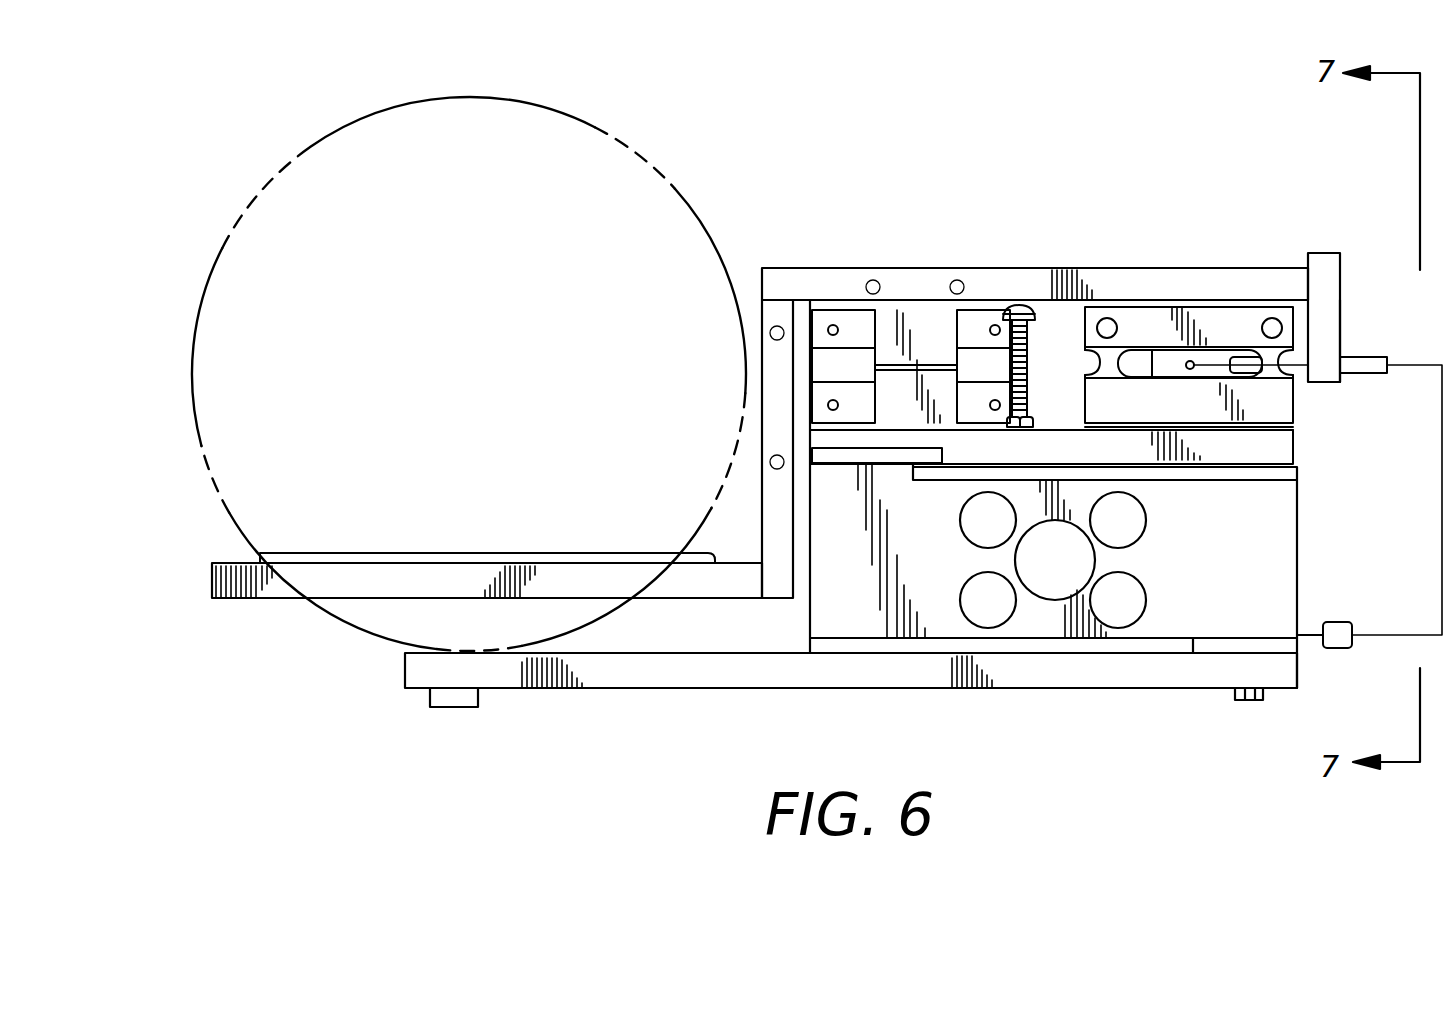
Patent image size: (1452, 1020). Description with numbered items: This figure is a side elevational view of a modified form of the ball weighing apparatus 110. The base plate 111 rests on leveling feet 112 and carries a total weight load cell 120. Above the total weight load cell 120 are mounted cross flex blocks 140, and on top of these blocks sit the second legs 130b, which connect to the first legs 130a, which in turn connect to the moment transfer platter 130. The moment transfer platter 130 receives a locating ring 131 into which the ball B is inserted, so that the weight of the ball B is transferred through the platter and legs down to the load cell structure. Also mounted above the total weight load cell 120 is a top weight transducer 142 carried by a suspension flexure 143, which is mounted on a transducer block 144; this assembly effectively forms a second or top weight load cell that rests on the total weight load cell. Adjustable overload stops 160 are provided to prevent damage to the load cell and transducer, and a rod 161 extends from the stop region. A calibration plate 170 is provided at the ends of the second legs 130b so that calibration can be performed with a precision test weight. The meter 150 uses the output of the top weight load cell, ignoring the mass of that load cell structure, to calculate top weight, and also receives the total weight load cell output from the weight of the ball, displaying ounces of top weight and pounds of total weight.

The ball B is at (247, 210).
The holding fixture 110 is at (968, 220).
The base plate 111 is at (1090, 678).
The leveling feet 112 is at (422, 697).
The total weight load cell 120 is at (1270, 600).
The moment transfer platter 130 is at (200, 592).
The first legs 130a is at (755, 287).
The second legs 130b is at (1086, 260).
The locating ring 131 is at (310, 562).
The cross flex blocks 140 is at (890, 310).
The top weight transducer 142 is at (1238, 374).
The suspension flexure 143 is at (1113, 350).
The transducer block 144 is at (1283, 443).
The meter 150 is at (1337, 650).
The adjustable overload stops 160 is at (1343, 320).
The rod 161 is at (1347, 380).
The calibration plate 170 is at (1343, 288).